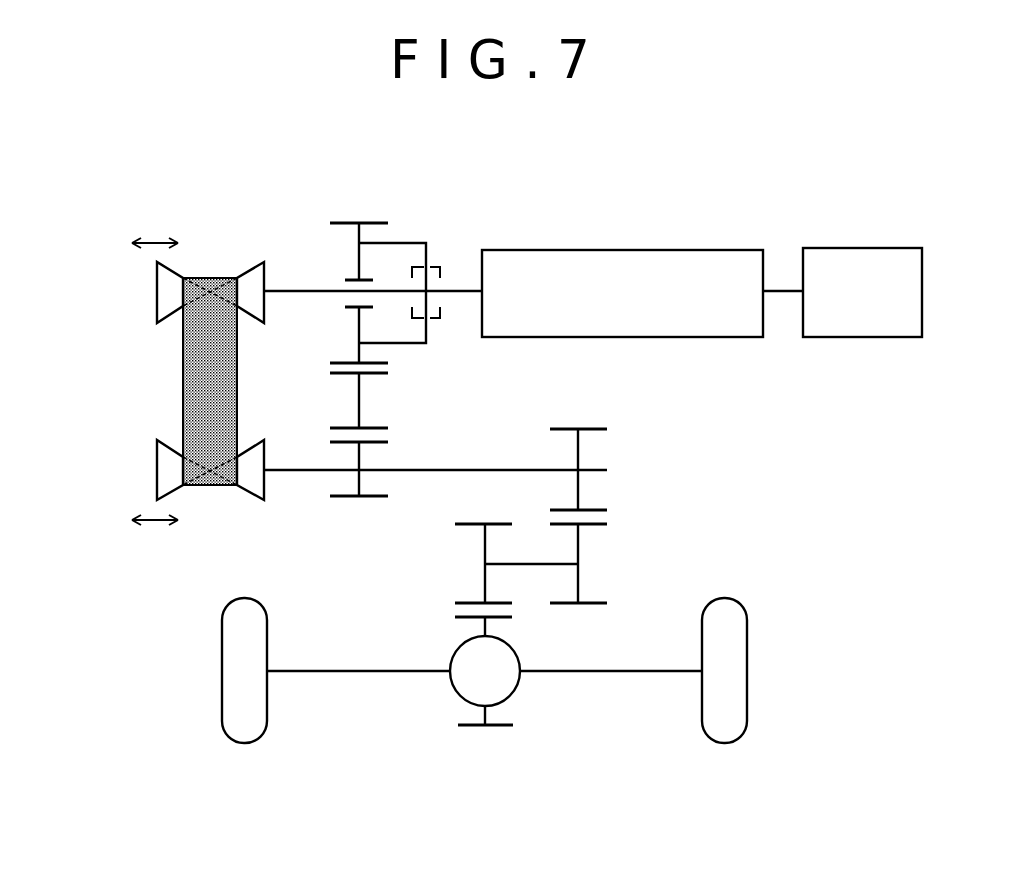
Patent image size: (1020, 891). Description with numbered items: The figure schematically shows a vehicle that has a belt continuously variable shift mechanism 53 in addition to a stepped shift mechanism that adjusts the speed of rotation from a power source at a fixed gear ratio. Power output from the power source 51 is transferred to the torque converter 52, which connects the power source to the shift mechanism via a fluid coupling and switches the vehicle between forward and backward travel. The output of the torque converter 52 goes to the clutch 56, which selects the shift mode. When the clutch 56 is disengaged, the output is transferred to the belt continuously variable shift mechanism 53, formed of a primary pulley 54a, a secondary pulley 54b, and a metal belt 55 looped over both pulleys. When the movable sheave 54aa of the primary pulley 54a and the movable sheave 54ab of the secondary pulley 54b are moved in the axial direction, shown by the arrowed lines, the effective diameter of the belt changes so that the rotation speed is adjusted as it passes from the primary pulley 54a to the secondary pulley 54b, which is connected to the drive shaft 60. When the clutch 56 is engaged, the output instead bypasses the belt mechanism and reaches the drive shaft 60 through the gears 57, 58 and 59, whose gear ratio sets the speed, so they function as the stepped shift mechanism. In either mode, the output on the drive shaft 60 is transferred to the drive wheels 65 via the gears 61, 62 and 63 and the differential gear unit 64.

The power source 51 is at (862, 248).
The torque converter 52 is at (650, 250).
The belt continuously variable shift mechanism 53 is at (176, 359).
The primary pulley 54a is at (176, 258).
The movable sheave of the primary pulley 54aa is at (157, 265).
The secondary pulley 54b is at (188, 447).
The movable sheave of secondary pulley 54ab is at (157, 445).
The belt 55 is at (183, 378).
The clutch 56 is at (430, 266).
The gear 57 is at (365, 355).
The gear 58 is at (362, 400).
The gear 59 is at (362, 483).
The drive shaft 60 is at (492, 470).
The gear 61 is at (580, 442).
The gear 62 is at (580, 545).
The gear 63 is at (484, 538).
The differential gear unit 64 is at (462, 698).
The drive wheels 65 is at (250, 600).